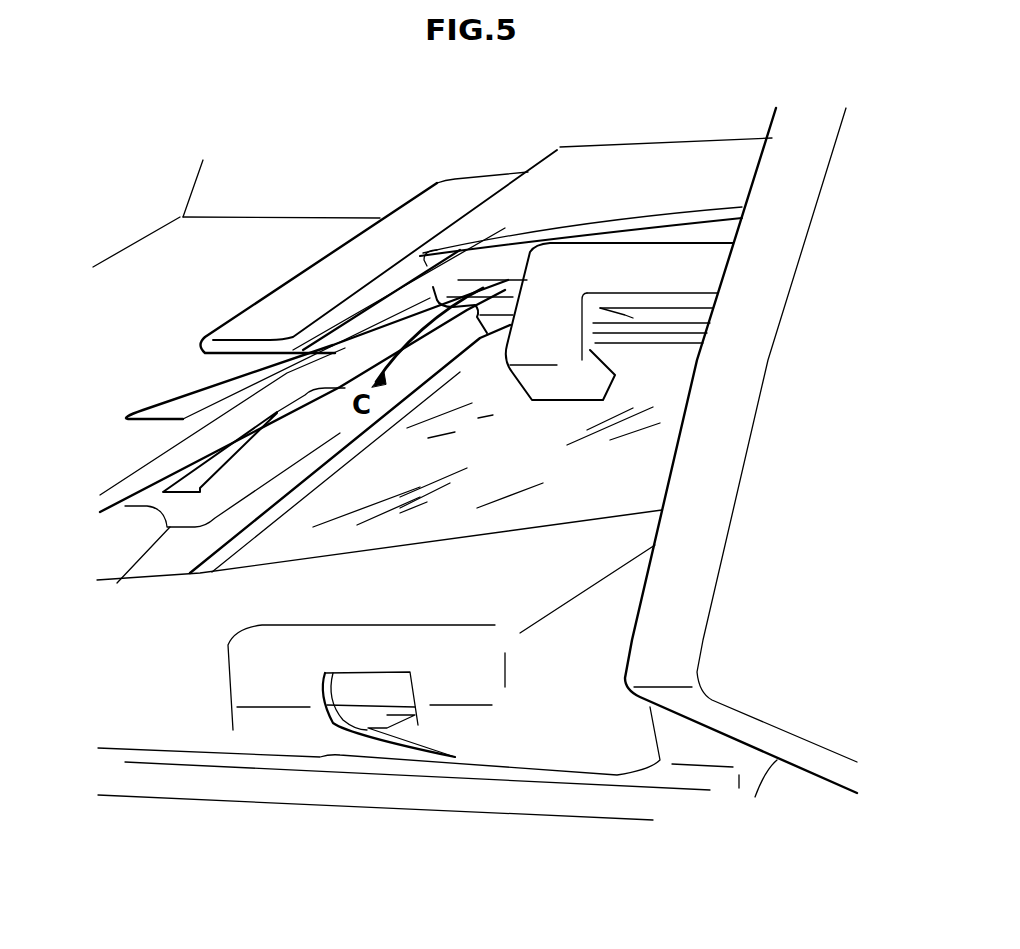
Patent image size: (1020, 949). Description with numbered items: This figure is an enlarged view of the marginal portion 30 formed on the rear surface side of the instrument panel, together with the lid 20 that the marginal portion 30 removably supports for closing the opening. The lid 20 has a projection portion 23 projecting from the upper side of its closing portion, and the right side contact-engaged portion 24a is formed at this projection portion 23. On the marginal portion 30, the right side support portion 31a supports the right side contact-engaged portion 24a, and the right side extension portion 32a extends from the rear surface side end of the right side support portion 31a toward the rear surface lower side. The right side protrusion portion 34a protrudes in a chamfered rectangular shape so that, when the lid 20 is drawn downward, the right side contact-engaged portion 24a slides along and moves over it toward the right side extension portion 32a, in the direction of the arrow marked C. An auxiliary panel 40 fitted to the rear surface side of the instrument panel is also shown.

The lid 20 is at (647, 464).
The projection portion 23 is at (710, 253).
The right side contact-engaged portion 24a is at (458, 292).
The marginal portion 30 is at (258, 353).
The right side support portion 31a is at (488, 313).
The right side extension portion 32a is at (253, 487).
The right side protrusion portion 34a is at (412, 327).
The auxiliary panel 40 is at (333, 326).